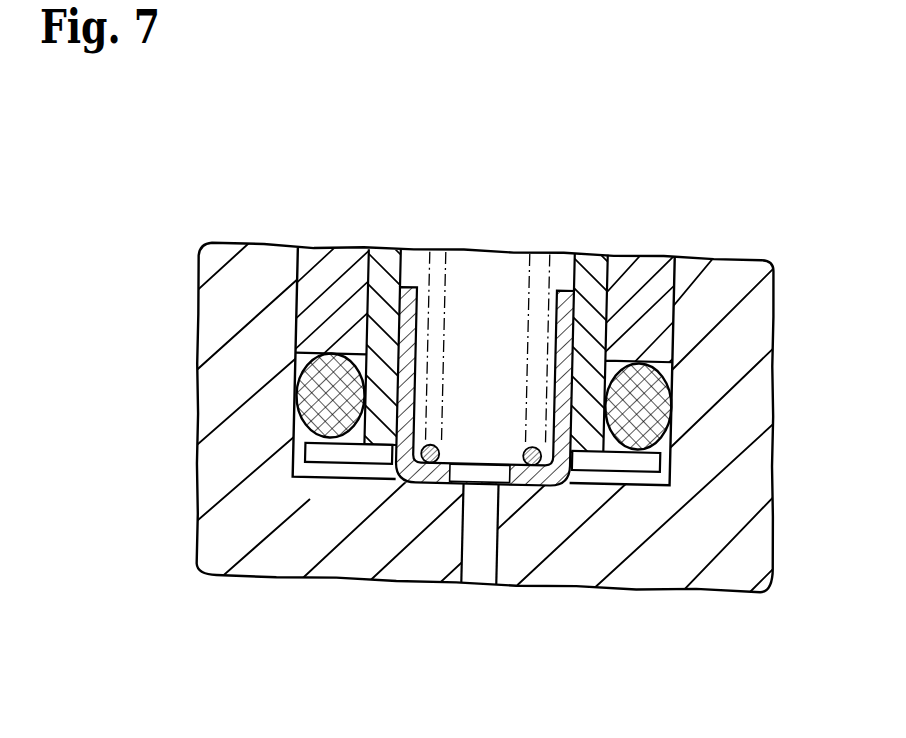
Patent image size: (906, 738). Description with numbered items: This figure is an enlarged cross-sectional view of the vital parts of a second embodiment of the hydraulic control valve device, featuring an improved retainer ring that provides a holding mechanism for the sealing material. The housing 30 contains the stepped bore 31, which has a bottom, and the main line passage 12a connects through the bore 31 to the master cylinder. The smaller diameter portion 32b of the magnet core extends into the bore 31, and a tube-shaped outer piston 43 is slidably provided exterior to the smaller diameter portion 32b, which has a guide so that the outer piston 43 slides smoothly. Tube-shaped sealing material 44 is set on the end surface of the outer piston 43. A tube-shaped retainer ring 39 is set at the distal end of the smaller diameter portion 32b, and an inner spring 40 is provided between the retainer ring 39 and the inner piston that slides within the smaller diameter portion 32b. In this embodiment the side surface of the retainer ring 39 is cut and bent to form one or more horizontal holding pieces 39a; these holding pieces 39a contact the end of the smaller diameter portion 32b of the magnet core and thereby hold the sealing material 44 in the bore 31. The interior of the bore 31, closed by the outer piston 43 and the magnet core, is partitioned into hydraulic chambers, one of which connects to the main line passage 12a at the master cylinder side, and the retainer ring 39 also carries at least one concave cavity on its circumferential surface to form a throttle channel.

The housing 30 is at (735, 268).
The main line passage 12a is at (487, 545).
The outer piston 43 is at (342, 253).
The smaller diameter portion 32b is at (592, 258).
The retainer ring 39 is at (422, 321).
The inner spring 40 is at (433, 445).
The sealing material 44 is at (673, 398).
The stepped bore 31 is at (342, 470).
The holding pieces 39a is at (632, 467).